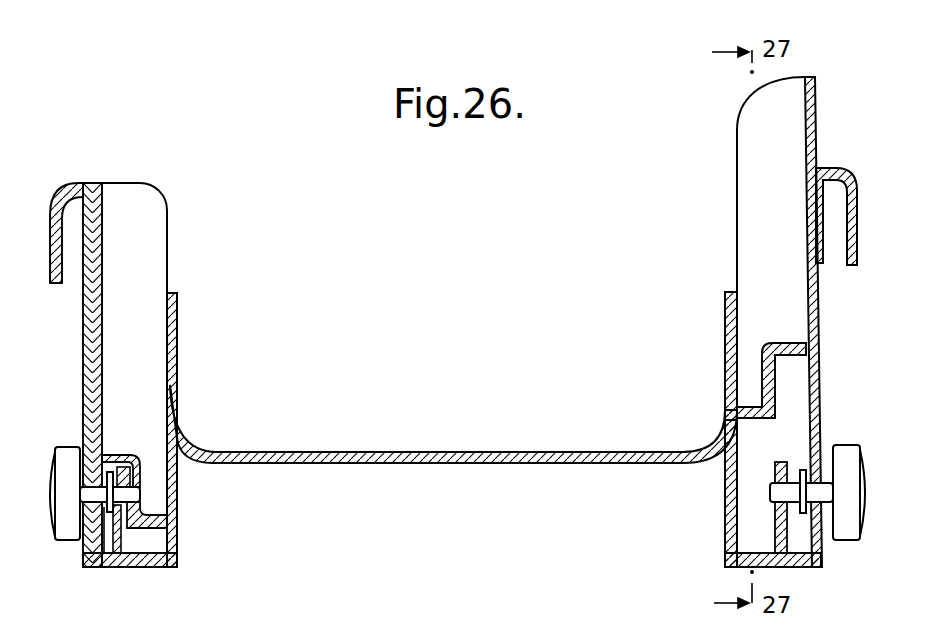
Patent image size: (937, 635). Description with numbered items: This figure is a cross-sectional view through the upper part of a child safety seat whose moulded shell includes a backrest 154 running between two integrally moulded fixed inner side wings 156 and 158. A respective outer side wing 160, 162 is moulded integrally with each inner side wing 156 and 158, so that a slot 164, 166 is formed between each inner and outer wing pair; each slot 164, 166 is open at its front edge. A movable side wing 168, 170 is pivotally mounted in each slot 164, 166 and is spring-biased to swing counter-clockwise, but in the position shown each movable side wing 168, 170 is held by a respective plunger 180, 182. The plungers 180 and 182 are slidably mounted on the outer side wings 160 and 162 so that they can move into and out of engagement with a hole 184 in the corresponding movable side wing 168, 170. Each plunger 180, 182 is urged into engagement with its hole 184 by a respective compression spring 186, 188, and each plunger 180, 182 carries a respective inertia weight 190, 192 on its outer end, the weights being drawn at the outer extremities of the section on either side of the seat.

The backrest 154 is at (318, 462).
The fixed inner side wing 156 is at (725, 362).
The fixed inner side wing 158 is at (175, 373).
The outer side wing 160 is at (863, 165).
The outer side wing 162 is at (82, 195).
The slot 164 is at (737, 259).
The slot 166 is at (155, 292).
The movable side wing 168 is at (810, 118).
The movable side wing 170 is at (98, 209).
The plunger 180 is at (725, 508).
The plunger 182 is at (137, 490).
The hole 184 is at (766, 382).
The compression spring 186 is at (806, 508).
The compression spring 188 is at (102, 567).
The inertia weight 190 is at (842, 455).
The inertia weight 192 is at (65, 450).